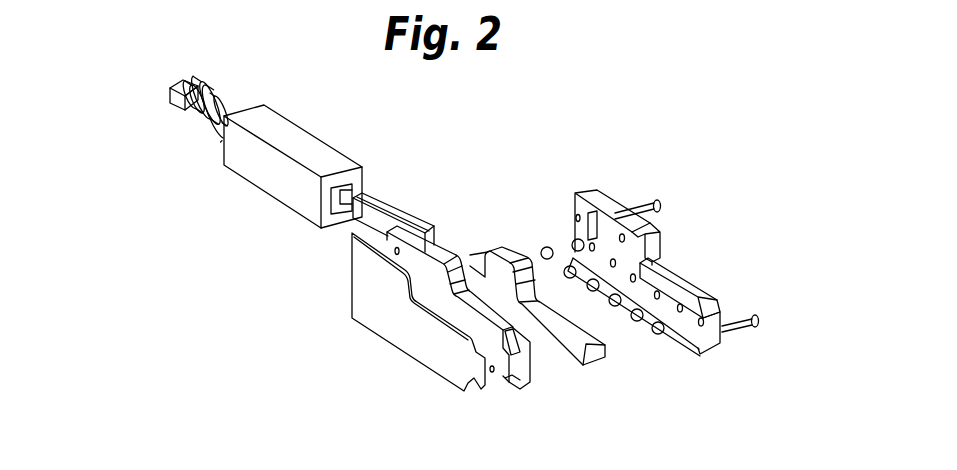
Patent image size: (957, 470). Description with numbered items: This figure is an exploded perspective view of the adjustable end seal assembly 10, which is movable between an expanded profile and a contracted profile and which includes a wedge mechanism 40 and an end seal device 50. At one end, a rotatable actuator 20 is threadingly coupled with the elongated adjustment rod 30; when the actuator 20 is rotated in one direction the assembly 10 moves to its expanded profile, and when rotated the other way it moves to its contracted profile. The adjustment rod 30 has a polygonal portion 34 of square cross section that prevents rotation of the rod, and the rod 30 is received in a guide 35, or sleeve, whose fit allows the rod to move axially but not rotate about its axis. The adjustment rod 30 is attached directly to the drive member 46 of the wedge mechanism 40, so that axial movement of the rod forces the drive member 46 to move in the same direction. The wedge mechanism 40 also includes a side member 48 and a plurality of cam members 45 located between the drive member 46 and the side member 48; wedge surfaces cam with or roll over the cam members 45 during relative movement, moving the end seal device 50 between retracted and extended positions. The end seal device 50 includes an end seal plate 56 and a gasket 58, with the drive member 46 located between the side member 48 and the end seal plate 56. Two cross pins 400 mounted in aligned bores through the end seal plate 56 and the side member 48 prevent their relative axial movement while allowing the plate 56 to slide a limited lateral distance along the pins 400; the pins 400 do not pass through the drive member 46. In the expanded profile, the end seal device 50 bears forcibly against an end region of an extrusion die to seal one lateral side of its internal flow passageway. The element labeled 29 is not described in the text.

The adjustable end seal assembly 10 is at (175, 340).
The actuator 20 is at (175, 113).
The cable plug 29 is at (176, 79).
The adjustment rod 30 is at (343, 190).
The polygonal portion 34 is at (396, 211).
The guide 35 is at (271, 182).
The wedge mechanism 40 is at (743, 357).
The cam members 45 is at (580, 238).
The drive member 46 is at (500, 246).
The side member 48 is at (700, 283).
The end seal device 50 is at (548, 385).
The end seal plate 56 is at (396, 244).
The gasket 58 is at (410, 336).
The cross pins 400 is at (662, 212).